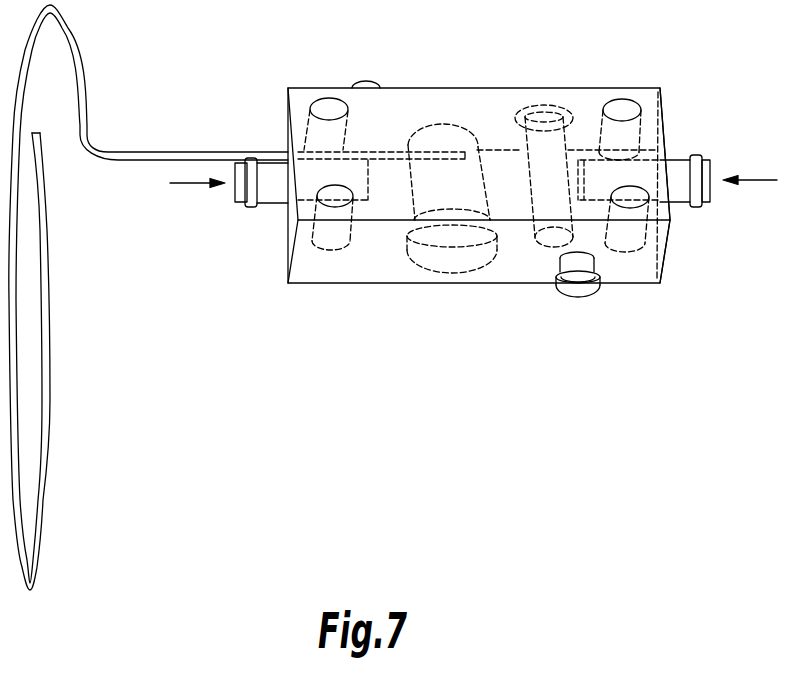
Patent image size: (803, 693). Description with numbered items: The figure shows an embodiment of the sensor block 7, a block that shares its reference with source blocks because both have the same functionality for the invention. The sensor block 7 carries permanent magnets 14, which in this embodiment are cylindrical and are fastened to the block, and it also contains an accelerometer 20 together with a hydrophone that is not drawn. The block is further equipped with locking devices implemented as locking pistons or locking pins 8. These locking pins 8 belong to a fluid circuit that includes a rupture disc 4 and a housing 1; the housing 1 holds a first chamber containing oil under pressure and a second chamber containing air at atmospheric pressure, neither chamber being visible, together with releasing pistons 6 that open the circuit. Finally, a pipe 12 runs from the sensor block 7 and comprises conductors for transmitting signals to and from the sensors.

The housing 1 is at (462, 100).
The rupture disc 4 is at (542, 107).
The releasing pistons 6 is at (680, 160).
The sensor block 7 is at (693, 273).
The locking pins 8 is at (580, 290).
The pipe 12 is at (45, 460).
The permanent magnets 14 is at (330, 107).
The accelerometer 20 is at (445, 260).